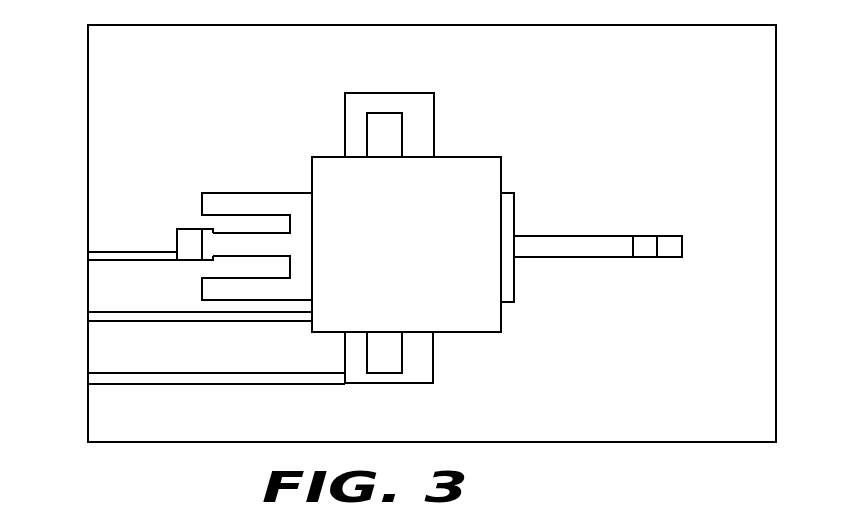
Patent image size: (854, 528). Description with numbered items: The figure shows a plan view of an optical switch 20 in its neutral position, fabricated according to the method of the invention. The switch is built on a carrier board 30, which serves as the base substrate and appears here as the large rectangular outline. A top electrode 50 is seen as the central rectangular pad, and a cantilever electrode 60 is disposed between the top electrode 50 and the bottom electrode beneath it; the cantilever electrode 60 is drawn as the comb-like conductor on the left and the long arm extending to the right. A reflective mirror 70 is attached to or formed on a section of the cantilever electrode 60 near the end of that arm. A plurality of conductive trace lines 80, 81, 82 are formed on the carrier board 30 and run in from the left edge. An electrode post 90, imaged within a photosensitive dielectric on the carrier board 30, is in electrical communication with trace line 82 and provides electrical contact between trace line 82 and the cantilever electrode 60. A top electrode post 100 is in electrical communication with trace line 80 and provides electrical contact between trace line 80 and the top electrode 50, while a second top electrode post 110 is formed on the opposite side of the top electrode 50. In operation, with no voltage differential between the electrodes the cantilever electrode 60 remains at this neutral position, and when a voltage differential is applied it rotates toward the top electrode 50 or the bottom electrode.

The optical switch 20 is at (519, 461).
The carrier board 30 is at (712, 442).
The top electrode 50 is at (487, 156).
The cantilever electrode 60 is at (228, 193).
The reflective mirror 70 is at (644, 251).
The conductive trace line 80 is at (90, 378).
The conductive trace line 81 is at (90, 314).
The conductive trace line 82 is at (90, 252).
The electrode post 90 is at (177, 240).
The top electrode post 100 is at (434, 358).
The top electrode post 110 is at (434, 99).